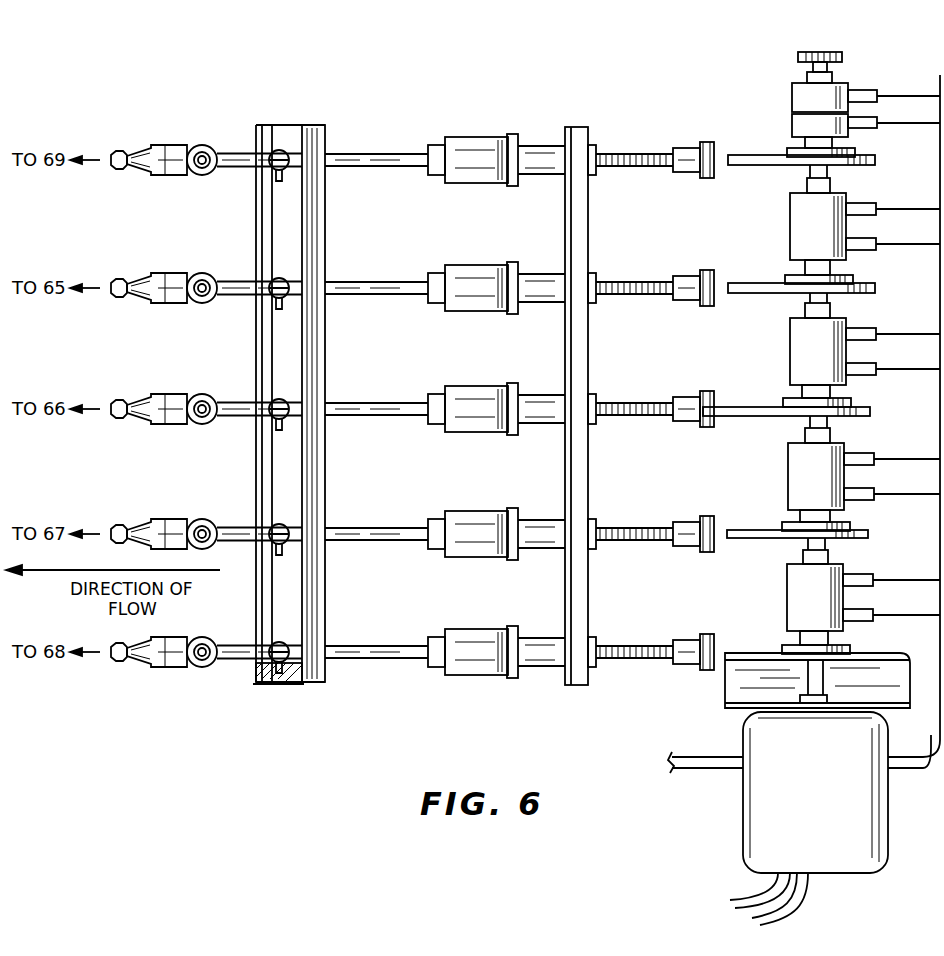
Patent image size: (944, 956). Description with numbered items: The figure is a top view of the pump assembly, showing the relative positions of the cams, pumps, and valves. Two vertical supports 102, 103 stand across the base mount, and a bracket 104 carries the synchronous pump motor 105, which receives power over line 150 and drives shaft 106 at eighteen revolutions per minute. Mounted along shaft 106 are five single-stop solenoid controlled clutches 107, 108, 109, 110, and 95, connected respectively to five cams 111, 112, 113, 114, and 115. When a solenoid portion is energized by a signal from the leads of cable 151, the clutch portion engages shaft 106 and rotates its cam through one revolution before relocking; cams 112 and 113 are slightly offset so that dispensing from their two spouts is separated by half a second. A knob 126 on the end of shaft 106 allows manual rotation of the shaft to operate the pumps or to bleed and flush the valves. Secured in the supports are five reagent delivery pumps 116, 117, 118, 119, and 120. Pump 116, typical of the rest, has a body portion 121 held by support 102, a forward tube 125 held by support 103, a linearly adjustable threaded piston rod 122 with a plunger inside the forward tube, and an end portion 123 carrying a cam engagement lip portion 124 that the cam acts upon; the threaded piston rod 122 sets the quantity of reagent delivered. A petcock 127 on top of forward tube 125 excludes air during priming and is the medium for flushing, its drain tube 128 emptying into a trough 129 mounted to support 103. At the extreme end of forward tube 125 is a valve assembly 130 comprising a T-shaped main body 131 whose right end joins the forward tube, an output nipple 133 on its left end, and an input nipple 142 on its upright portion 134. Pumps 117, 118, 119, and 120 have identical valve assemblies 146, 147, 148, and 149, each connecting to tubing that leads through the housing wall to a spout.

The solenoid controlled clutch 95 is at (792, 98).
The vertical support 102 is at (586, 129).
The vertical support 103 is at (330, 136).
The bracket 104 is at (908, 703).
The synchronous pump motor 105 is at (886, 778).
The shaft 106 is at (788, 670).
The solenoid controlled clutch 107 is at (845, 575).
The solenoid controlled clutch 108 is at (845, 450).
The solenoid controlled clutch 109 is at (850, 322).
The solenoid controlled clutch 110 is at (848, 198).
The cam 111 is at (870, 655).
The cam 112 is at (868, 533).
The cam 113 is at (870, 410).
The cam 114 is at (900, 278).
The cam 115 is at (876, 160).
The reagent delivery pump 116 is at (485, 628).
The reagent delivery pump 117 is at (490, 512).
The reagent delivery pump 118 is at (490, 386).
The reagent delivery pump 119 is at (485, 265).
The reagent delivery pump 120 is at (458, 137).
The body portion 121 is at (528, 675).
The threaded piston rod 122 is at (613, 645).
The end portion 123 is at (685, 640).
The cam engagement lip portion 124 is at (712, 634).
The forward tube 125 is at (388, 659).
The knob 126 is at (842, 57).
The petcock 127 is at (290, 648).
The drain tube 128 is at (292, 682).
The trough 129 is at (278, 684).
The valve assembly 130 is at (245, 653).
The T-shaped main body 131 is at (175, 668).
The output nipple 133 is at (113, 662).
The upright portion 134 is at (198, 667).
The input nipple 142 is at (200, 637).
The valve assembly 146 is at (180, 517).
The valve assembly 147 is at (172, 396).
The valve assembly 148 is at (172, 275).
The valve assembly 149 is at (170, 147).
The line 150 is at (790, 895).
The cable 151 is at (705, 770).